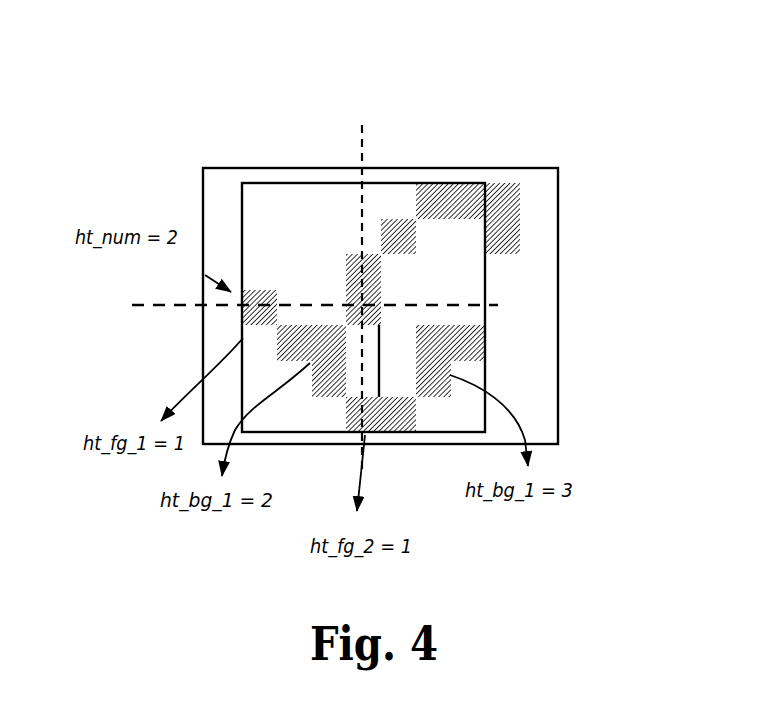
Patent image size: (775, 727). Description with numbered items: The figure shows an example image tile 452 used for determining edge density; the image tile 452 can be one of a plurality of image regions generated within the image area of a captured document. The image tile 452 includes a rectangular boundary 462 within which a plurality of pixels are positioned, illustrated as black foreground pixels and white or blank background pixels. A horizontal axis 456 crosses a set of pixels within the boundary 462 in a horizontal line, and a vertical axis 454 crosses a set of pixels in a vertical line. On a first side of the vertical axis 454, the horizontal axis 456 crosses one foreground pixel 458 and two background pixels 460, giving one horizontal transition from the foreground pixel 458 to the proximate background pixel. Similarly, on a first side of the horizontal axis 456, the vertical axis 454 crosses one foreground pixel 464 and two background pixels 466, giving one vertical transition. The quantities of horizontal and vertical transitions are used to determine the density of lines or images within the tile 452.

The image tile 452 is at (640, 105).
The vertical axis 454 is at (366, 150).
The horizontal axis 456 is at (490, 307).
The foreground pixel 458 is at (262, 290).
The background pixels 460 is at (303, 322).
The boundary 462 is at (469, 183).
The foreground pixel 464 is at (357, 428).
The background pixels 466 is at (372, 330).